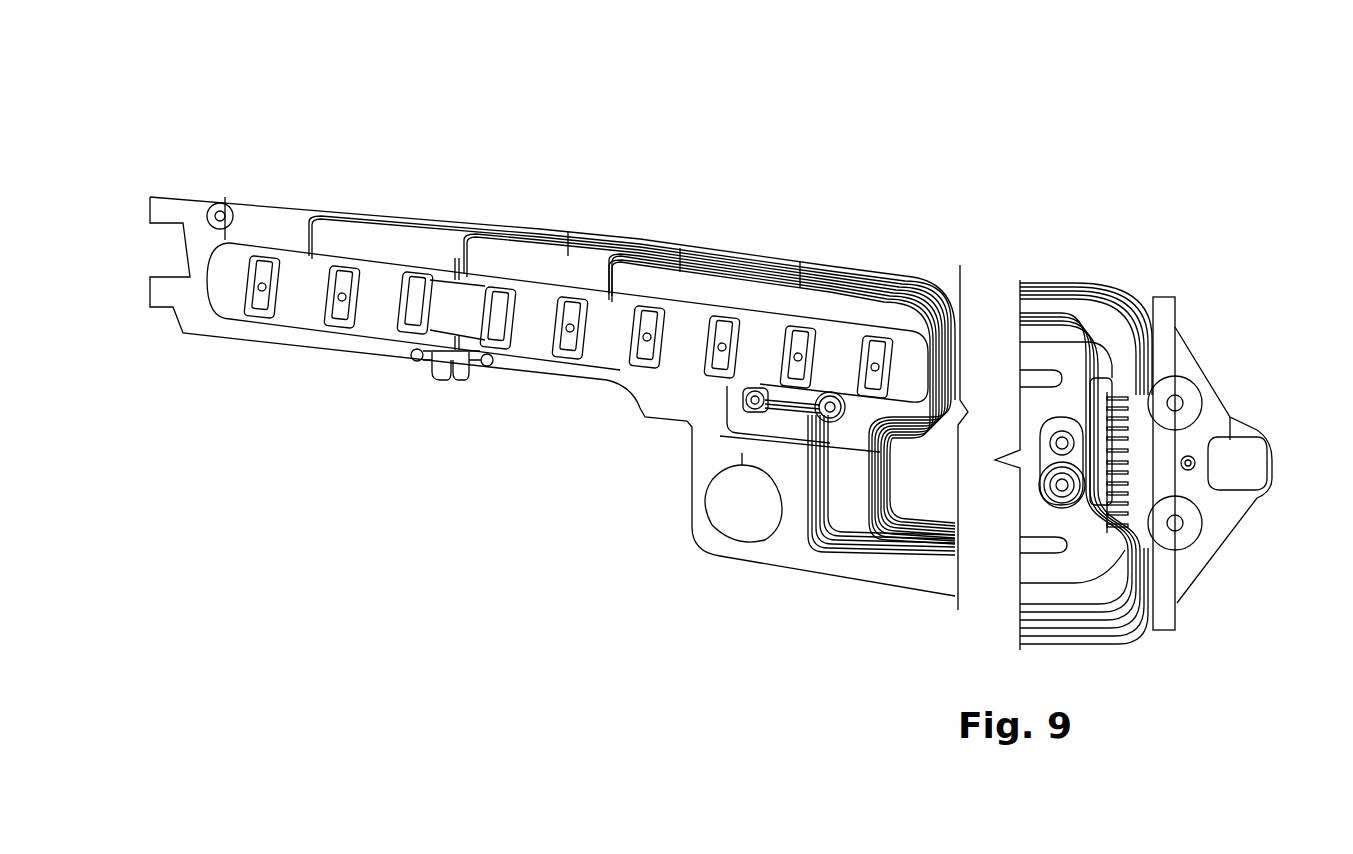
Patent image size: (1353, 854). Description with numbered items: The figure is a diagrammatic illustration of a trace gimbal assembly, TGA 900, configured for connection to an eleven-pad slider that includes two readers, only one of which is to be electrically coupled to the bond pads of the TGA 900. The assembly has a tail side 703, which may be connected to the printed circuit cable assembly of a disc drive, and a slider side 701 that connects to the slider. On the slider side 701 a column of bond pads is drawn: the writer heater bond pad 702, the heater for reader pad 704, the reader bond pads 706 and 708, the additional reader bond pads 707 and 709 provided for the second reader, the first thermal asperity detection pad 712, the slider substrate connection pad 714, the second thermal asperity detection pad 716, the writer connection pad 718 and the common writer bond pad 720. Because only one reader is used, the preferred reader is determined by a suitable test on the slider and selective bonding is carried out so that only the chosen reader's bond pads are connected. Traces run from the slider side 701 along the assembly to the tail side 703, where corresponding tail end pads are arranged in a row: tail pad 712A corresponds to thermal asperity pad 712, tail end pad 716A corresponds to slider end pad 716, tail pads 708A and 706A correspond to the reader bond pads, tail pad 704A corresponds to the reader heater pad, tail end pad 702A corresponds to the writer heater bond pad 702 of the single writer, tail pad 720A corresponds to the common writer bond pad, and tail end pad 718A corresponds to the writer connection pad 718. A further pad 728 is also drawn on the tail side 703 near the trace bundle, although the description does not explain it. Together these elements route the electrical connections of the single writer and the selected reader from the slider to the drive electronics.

The trace gimbal assembly 900 is at (1130, 118).
The tail side 703 is at (840, 645).
The slider side 701 is at (1205, 645).
The tail pad 712A is at (262, 308).
The tail end pad 716A is at (338, 317).
The tail pad 708A is at (418, 327).
The tail pad 706A is at (493, 337).
The tail pad 704A is at (567, 347).
The tail end pad 702A is at (645, 357).
The tail pad 720A is at (720, 368).
The tail end pad 718A is at (800, 375).
The ground pad 728 is at (868, 395).
The first thermal asperity detection pad 712 is at (1118, 402).
The second thermal asperity detection pad 716 is at (1117, 415).
The reader bond pad 707 is at (1118, 427).
The reader bond pad 709 is at (1118, 437).
The reader bond pad 708 is at (1115, 450).
The reader bond pad 706 is at (1117, 463).
The writer heater bond pad 702 is at (1117, 477).
The heater for reader pad 704 is at (1117, 490).
The slider substrate connection pad 714 is at (1117, 503).
The writer connection pad 718 is at (1118, 515).
The common writer bond pad 720 is at (1118, 527).